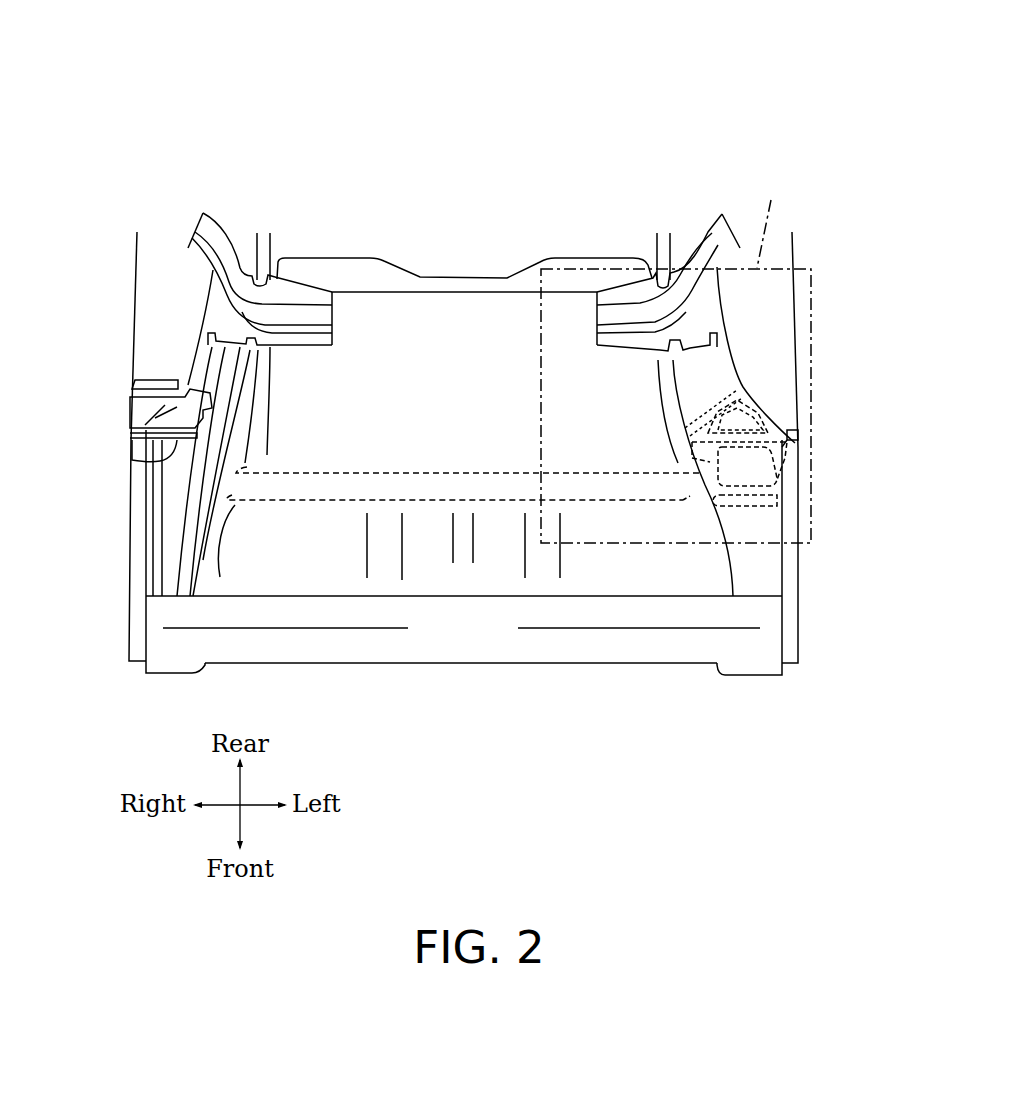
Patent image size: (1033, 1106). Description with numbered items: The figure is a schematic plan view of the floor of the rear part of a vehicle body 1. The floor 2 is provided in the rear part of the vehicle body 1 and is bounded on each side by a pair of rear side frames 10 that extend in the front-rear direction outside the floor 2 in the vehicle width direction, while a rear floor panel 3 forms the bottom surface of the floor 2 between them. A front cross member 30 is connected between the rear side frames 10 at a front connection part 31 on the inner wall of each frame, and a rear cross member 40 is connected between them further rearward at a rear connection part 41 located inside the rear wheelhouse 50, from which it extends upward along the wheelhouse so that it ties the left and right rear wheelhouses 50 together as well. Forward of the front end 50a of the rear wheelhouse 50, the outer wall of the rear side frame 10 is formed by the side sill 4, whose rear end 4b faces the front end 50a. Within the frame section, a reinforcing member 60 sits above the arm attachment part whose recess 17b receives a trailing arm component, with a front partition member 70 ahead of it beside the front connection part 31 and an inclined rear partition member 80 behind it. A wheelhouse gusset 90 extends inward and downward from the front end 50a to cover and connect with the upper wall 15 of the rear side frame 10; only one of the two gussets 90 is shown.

The vehicle body 1 is at (500, 133).
The floor 2 is at (402, 200).
The rear floor panel 3 is at (502, 553).
The side sill 4 is at (133, 565).
The rear end of the side sill 4b is at (128, 420).
The rear side frame 10 is at (210, 358).
The upper wall 15 is at (172, 517).
The recess 17b is at (743, 459).
The front cross member 30 is at (620, 490).
The front connection part 31 is at (683, 490).
The rear cross member 40 is at (502, 313).
The rear connection part 41 is at (660, 311).
The rear wheelhouse 50 is at (167, 265).
The front end of the rear wheelhouse 50a is at (140, 408).
The reinforcing member 60 is at (778, 416).
The front partition member 70 is at (759, 505).
The rear partition member 80 is at (735, 376).
The wheelhouse gusset 90 is at (173, 460).